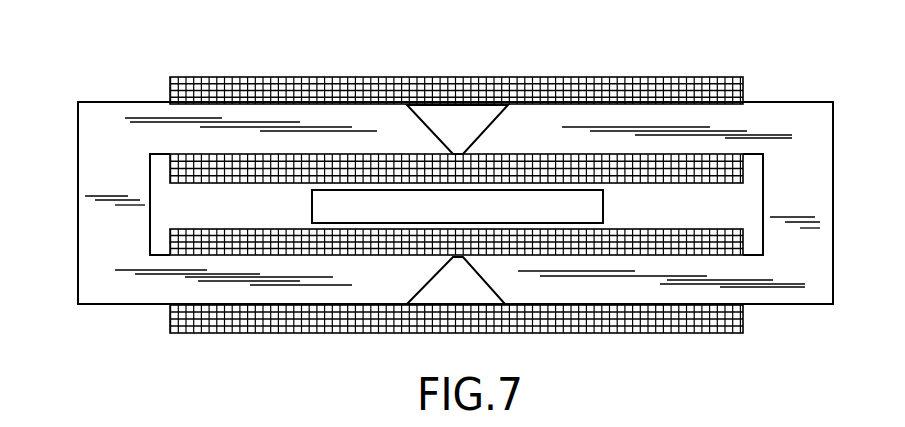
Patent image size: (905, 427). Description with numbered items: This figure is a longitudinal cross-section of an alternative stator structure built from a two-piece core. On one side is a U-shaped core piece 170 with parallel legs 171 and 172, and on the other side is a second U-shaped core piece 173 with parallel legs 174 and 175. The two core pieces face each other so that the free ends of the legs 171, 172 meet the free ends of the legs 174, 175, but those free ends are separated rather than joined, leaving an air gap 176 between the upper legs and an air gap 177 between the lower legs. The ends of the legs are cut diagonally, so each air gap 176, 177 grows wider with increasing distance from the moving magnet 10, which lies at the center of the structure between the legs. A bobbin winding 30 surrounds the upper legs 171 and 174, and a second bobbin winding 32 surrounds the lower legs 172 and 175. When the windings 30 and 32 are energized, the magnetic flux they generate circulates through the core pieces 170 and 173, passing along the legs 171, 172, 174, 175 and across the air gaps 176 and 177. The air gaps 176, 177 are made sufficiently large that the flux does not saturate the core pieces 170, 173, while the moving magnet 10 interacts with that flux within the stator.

The U-shaped core piece 170 is at (82, 80).
The leg 171 is at (313, 118).
The leg 172 is at (150, 286).
The U-shaped core piece 173 is at (822, 81).
The leg 174 is at (558, 122).
The leg 175 is at (755, 290).
The air gap 176 is at (455, 126).
The air gap 177 is at (447, 288).
The bobbin winding 30 is at (533, 84).
The bobbin winding 32 is at (562, 323).
The moving magnet 10 is at (603, 208).